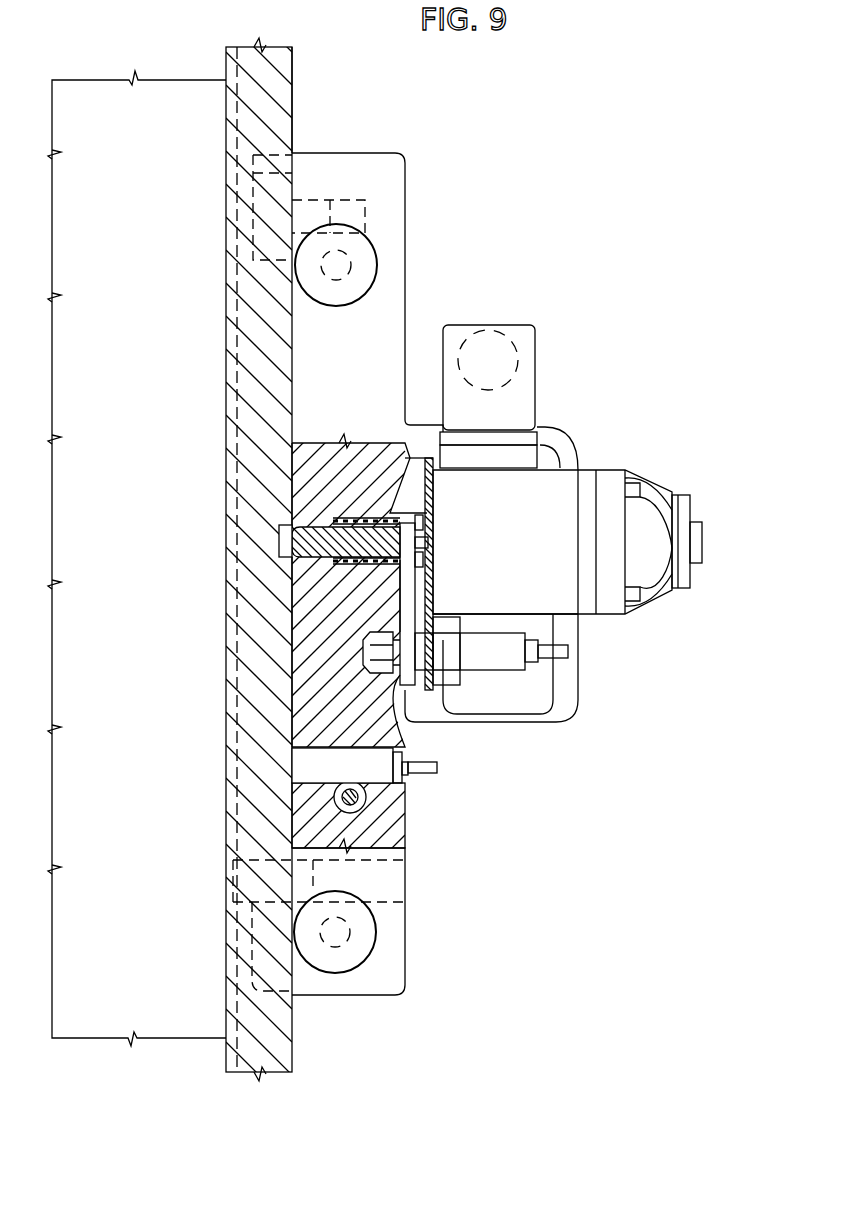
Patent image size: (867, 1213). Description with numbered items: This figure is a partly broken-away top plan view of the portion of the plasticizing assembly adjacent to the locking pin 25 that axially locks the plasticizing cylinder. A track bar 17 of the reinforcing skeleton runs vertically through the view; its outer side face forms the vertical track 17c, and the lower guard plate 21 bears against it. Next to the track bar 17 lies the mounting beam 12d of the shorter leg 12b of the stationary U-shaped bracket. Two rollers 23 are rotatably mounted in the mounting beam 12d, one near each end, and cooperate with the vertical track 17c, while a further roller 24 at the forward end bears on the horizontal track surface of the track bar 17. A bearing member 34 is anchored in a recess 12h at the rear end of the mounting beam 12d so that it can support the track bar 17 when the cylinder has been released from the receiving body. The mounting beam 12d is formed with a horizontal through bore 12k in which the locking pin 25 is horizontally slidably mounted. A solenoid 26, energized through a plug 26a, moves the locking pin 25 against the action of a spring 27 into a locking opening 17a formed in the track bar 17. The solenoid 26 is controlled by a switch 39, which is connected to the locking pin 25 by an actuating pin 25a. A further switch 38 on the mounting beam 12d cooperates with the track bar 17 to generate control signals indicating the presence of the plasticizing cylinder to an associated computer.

The track bar 17 is at (300, 1052).
The vertical track 17c is at (292, 97).
The locking opening 17a is at (300, 541).
The lower guard plate 21 is at (100, 983).
The roller 24 is at (276, 205).
The roller 23 is at (362, 275).
The mounting beam 12d is at (383, 338).
The recess 12h is at (365, 885).
The shorter leg 12b is at (532, 685).
The horizontal through bore 12k is at (285, 527).
The solenoid 26 is at (577, 527).
The plug 26a is at (493, 368).
The spring 27 is at (330, 518).
The locking pin 25 is at (400, 545).
The actuating pin 25a is at (403, 647).
The switch 39 is at (473, 652).
The switch 38 is at (370, 768).
The bearing member 34 is at (240, 892).